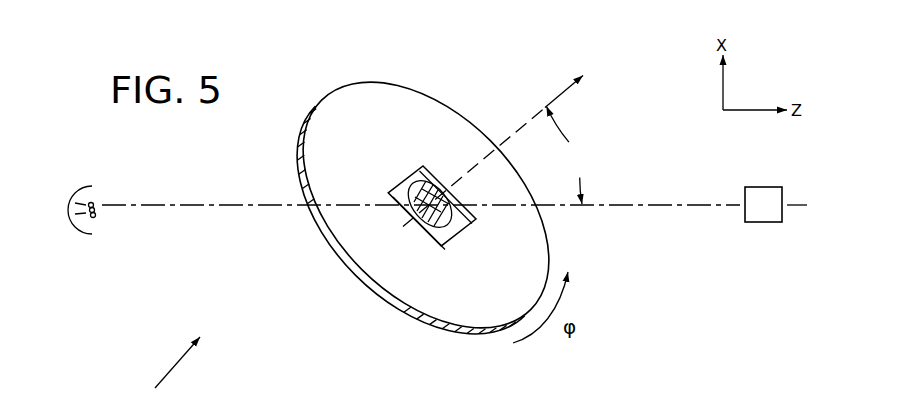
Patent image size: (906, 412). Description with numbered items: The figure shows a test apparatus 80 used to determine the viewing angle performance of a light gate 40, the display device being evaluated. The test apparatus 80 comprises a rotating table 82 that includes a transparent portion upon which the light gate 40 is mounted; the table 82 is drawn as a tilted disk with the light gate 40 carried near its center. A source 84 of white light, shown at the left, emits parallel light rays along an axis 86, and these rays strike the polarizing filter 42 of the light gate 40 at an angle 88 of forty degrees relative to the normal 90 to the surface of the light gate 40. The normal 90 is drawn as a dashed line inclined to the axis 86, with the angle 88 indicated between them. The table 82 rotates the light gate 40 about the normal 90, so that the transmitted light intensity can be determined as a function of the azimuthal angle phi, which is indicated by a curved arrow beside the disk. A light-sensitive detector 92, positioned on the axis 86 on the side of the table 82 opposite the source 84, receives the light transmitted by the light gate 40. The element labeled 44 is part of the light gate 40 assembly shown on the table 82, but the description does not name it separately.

The test apparatus 80 is at (168, 374).
The rotating table 82 is at (341, 255).
The source of white light 84 is at (66, 204).
The axis 86 is at (680, 205).
The angle 88 is at (568, 141).
The normal 90 is at (517, 128).
The light-sensitive detector 92 is at (757, 187).
The light gate 40 is at (410, 165).
The polarizing filter 42 is at (407, 219).
The hologram substrate 44 is at (455, 220).